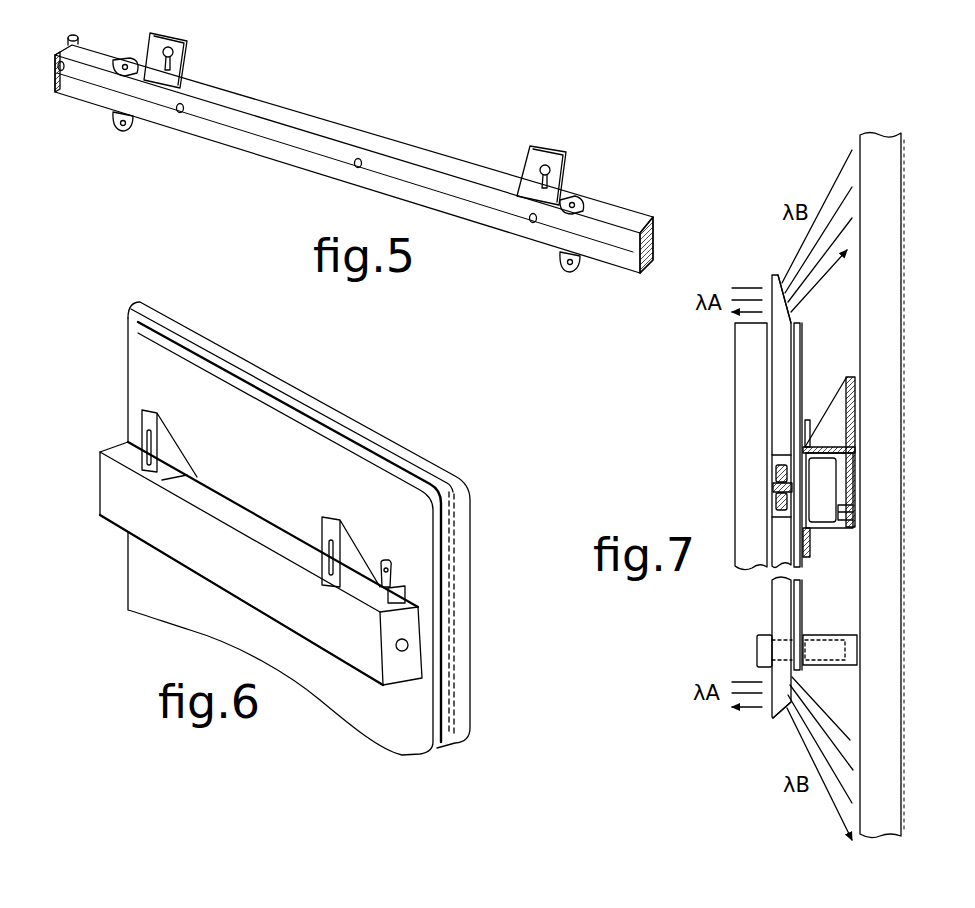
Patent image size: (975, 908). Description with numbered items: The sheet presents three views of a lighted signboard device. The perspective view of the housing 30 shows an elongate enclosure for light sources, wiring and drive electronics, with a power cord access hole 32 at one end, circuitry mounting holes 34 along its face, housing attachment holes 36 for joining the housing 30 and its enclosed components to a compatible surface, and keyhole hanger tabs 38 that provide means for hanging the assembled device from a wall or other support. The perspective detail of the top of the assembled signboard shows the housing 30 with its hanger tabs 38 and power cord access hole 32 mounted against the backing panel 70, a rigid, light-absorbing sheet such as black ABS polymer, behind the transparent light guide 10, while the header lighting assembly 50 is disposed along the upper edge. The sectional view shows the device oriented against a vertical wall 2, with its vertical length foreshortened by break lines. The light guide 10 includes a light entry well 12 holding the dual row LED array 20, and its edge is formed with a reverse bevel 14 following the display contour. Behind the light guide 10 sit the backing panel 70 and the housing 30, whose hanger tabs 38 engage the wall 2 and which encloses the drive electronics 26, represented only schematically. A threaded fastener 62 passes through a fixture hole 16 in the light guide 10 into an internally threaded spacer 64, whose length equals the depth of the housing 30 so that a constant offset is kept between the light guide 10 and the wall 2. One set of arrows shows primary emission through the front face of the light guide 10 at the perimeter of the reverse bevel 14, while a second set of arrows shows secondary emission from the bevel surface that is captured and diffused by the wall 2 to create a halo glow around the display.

In FIG. 7, the wall 2 is at (886, 176).
In FIG. 6, the light guide 10 is at (148, 308).
In FIG. 7, the light guide 10 is at (772, 717).
In FIG. 6, the light entry well 12 is at (147, 314).
In FIG. 7, the light entry well 12 is at (781, 455).
In FIG. 7, the reverse bevel 14 is at (790, 313).
In FIG. 7, the fixture hole 16 is at (782, 636).
In FIG. 7, the dual row LED array 20 is at (777, 487).
In FIG. 7, the enclosed drive electronics 26 is at (834, 501).
In FIG. 5, the housing 30 is at (652, 217).
In FIG. 6, the housing 30 is at (100, 448).
In FIG. 7, the housing 30 is at (812, 554).
In FIG. 5, the power cord access hole 32 is at (55, 64).
In FIG. 6, the power cord access hole 32 is at (397, 643).
In FIG. 5, the circuitry mounting hole 34 is at (180, 113).
In FIG. 5, the housing attachment hole 36 is at (128, 57).
In FIG. 6, the housing attachment hole 36 is at (393, 577).
In FIG. 5, the keyhole hanger tab 38 is at (173, 33).
In FIG. 6, the keyhole hanger tab 38 is at (150, 408).
In FIG. 7, the keyhole hanger tab 38 is at (852, 377).
In FIG. 6, the header lighting assembly 50 is at (468, 520).
In FIG. 7, the header lighting assembly 50 is at (764, 374).
In FIG. 7, the threaded fastener 62 is at (757, 650).
In FIG. 7, the internally threaded spacer 64 is at (852, 637).
In FIG. 6, the backing panel 70 is at (283, 471).
In FIG. 7, the backing panel 70 is at (798, 366).